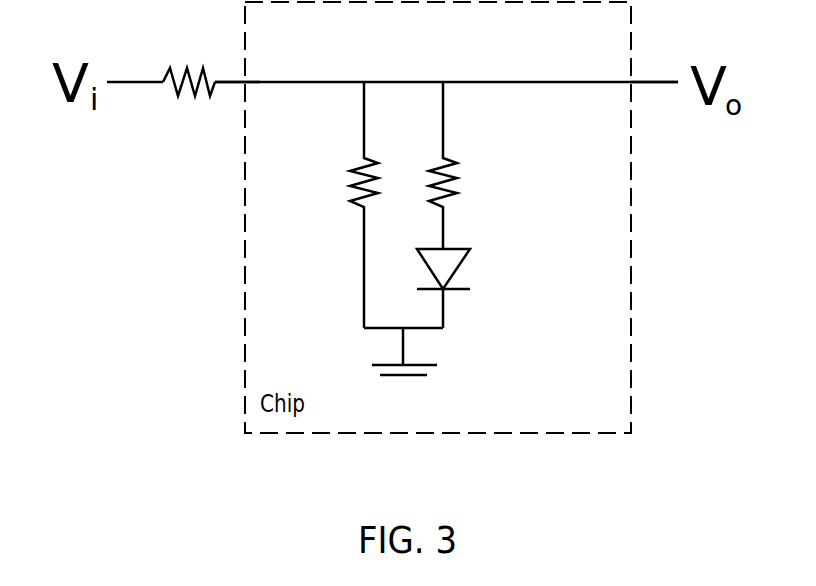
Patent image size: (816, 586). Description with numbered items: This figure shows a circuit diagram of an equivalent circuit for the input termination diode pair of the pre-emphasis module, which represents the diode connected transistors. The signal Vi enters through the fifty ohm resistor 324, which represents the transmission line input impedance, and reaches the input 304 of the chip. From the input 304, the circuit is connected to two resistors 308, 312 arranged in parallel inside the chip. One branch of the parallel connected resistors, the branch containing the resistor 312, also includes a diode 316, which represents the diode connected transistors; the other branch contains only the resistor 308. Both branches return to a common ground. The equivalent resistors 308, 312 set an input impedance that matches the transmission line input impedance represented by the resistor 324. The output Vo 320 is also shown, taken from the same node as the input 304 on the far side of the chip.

The input 304 is at (232, 84).
The resistor 308 is at (373, 158).
The resistor 312 is at (452, 158).
The diode 316 is at (456, 247).
The output Vo 320 is at (657, 84).
The 50 ohm resistor 324 is at (173, 90).